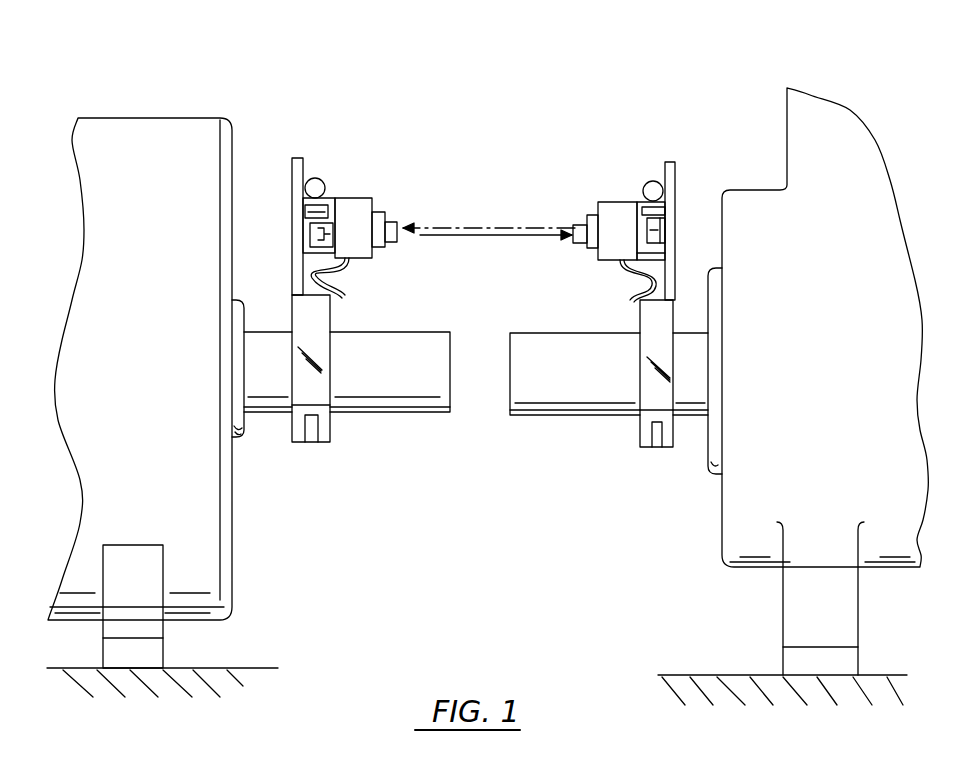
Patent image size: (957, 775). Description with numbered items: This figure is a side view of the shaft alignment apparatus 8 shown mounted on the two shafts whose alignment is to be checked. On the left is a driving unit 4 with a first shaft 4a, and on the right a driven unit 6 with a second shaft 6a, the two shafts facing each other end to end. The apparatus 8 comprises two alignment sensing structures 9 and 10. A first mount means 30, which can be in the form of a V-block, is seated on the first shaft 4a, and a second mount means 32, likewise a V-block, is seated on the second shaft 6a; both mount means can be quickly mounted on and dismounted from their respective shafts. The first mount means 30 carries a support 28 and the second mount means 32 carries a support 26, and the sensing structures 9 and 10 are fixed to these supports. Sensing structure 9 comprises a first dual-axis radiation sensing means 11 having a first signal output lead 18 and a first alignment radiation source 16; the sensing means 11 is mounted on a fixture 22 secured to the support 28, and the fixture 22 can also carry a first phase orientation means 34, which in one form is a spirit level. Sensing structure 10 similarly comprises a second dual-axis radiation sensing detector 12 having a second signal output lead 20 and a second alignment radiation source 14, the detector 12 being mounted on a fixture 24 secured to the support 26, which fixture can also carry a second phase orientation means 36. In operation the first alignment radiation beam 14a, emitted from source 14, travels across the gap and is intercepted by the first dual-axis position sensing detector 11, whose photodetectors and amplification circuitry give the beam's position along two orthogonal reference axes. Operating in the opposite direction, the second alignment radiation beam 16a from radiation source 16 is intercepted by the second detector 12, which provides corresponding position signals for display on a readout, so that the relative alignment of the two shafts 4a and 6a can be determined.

The driving unit 4 is at (163, 118).
The first shaft 4a is at (415, 406).
The driven unit 6 is at (787, 88).
The second shaft 6a is at (572, 406).
The shaft alignment apparatus 8 is at (660, 98).
The first sensing structure 9 is at (392, 190).
The second sensing structure 10 is at (588, 197).
The first dual-axis radiation sensing means 11 is at (362, 198).
The second dual-axis radiation sensing detector 12 is at (608, 255).
The second alignment radiation source 14 is at (660, 228).
The first alignment radiation beam 14a is at (478, 228).
The first alignment radiation source 16 is at (320, 236).
The second alignment radiation beam 16a is at (458, 236).
The first signal output lead 18 is at (347, 282).
The second signal output lead 20 is at (628, 292).
The fixture 22 is at (330, 198).
The fixture 24 is at (640, 204).
The support 26 is at (672, 162).
The support 28 is at (297, 158).
The first mount means 30 is at (330, 435).
The second mount means 32 is at (640, 440).
The first phase orientation means 34 is at (322, 180).
The second phase orientation means 36 is at (652, 181).